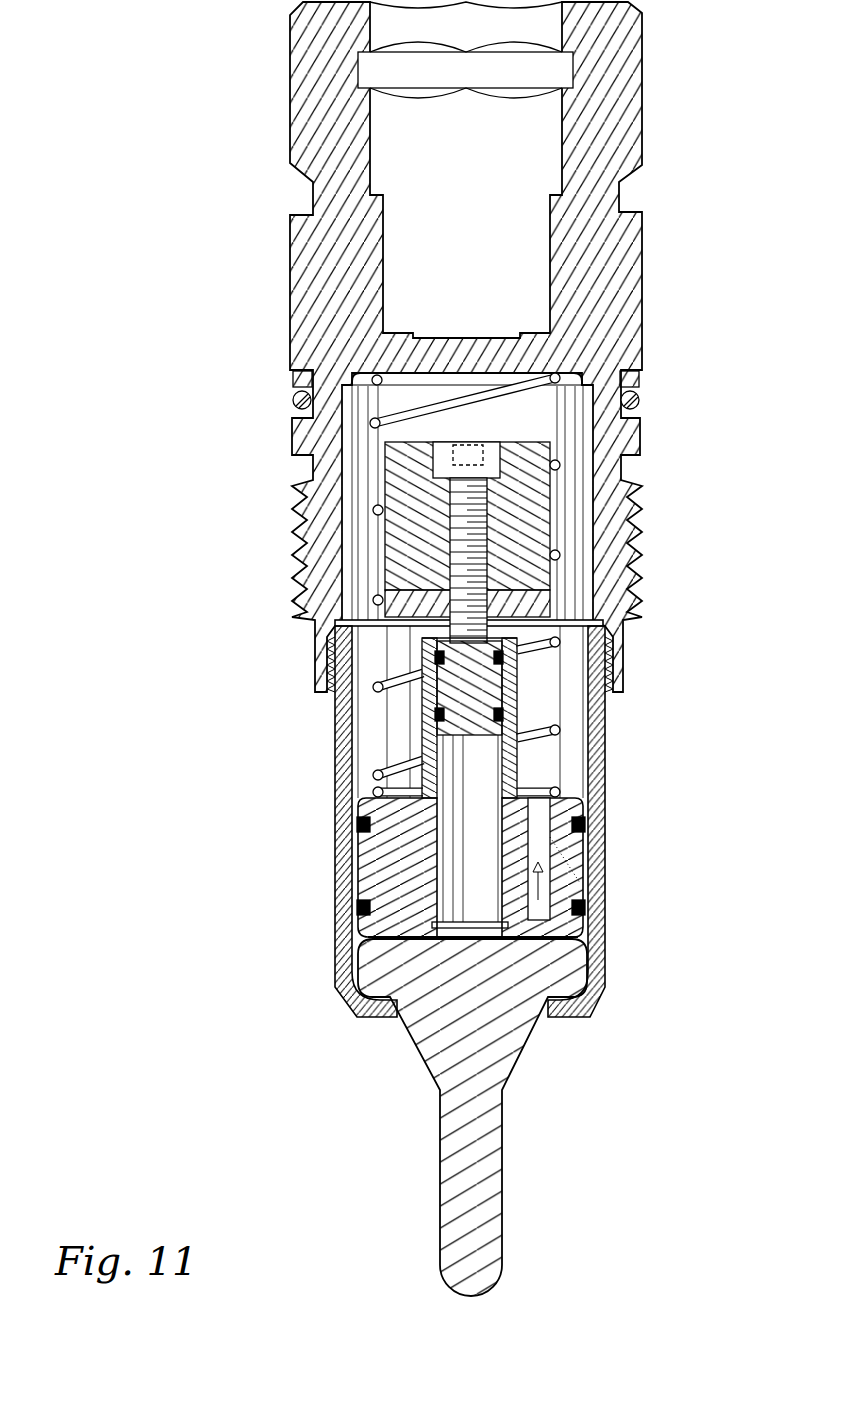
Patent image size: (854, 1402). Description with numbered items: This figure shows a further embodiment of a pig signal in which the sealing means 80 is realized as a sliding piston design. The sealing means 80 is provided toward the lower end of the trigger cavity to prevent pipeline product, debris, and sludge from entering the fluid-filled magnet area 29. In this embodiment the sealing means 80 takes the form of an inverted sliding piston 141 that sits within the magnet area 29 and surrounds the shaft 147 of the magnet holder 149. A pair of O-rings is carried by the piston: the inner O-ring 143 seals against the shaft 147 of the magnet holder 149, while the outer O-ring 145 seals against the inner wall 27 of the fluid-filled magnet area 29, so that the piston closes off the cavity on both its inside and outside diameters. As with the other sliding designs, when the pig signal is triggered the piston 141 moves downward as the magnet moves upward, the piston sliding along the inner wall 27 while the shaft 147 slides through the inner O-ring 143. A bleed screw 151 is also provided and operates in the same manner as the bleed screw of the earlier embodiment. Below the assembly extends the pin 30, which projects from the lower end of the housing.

The inner wall 27 is at (582, 742).
The magnet area 29 is at (548, 680).
The valve pin 30 is at (485, 1207).
The sealing means 80 is at (439, 649).
The inverted sliding piston 141 is at (383, 865).
The inner O-ring 143 is at (517, 702).
The outer O-ring 145 is at (587, 822).
The shaft 147 is at (462, 692).
The magnet holder 149 is at (403, 658).
The bleed screw 151 is at (582, 933).